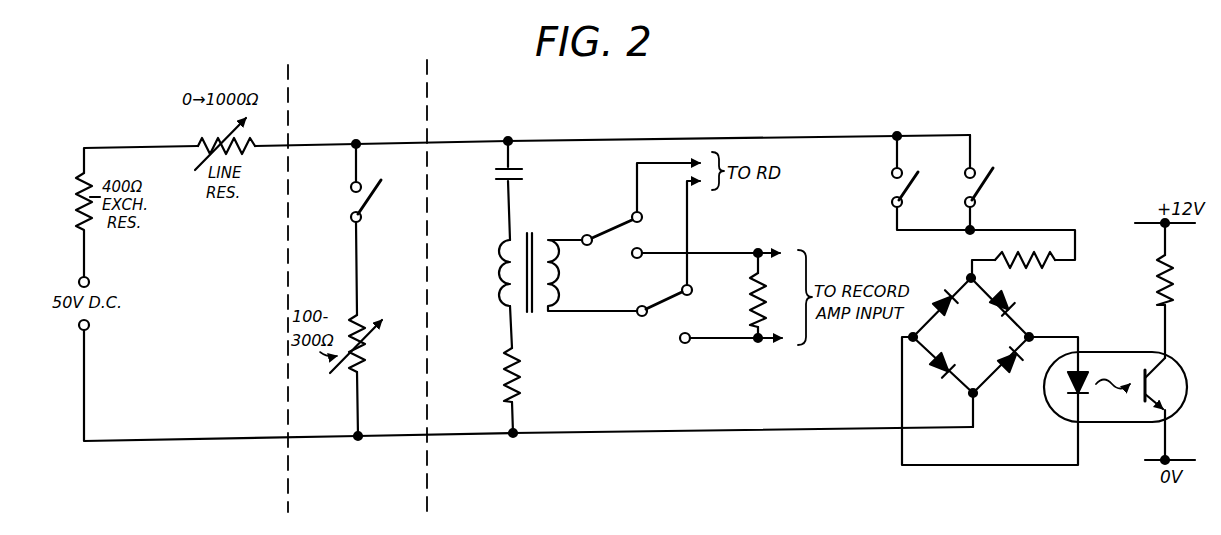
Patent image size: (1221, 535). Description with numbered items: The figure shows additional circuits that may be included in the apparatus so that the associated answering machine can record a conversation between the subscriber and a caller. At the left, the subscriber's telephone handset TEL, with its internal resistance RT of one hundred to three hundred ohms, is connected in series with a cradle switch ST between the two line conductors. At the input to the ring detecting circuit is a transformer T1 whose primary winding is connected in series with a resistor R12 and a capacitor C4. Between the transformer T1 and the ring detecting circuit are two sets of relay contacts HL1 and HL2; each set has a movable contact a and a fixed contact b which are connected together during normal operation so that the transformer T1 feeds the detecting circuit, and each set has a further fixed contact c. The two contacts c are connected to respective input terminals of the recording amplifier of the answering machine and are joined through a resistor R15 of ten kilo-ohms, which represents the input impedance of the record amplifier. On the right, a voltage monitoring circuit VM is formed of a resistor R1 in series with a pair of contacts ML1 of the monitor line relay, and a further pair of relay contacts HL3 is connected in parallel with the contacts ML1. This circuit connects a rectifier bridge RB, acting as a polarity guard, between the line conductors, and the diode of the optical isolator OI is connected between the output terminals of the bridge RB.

The cradle switch ST is at (364, 200).
The internal resistance RT is at (377, 352).
The telephone handset TEL is at (328, 397).
The capacitor C4 is at (527, 188).
The transformer T1 is at (550, 272).
The resistor R12 is at (520, 374).
The set of relay contacts HL1 is at (631, 215).
The set of relay contacts HL2 is at (701, 278).
The resistor R15 is at (737, 295).
The pair of relay contacts HL3 is at (907, 181).
The pair of contacts ML1 is at (986, 181).
The voltage monitoring circuit VM is at (1024, 224).
The resistor R1 is at (997, 258).
The rectifier bridge RB is at (1015, 301).
The optical isolator OI is at (1136, 351).